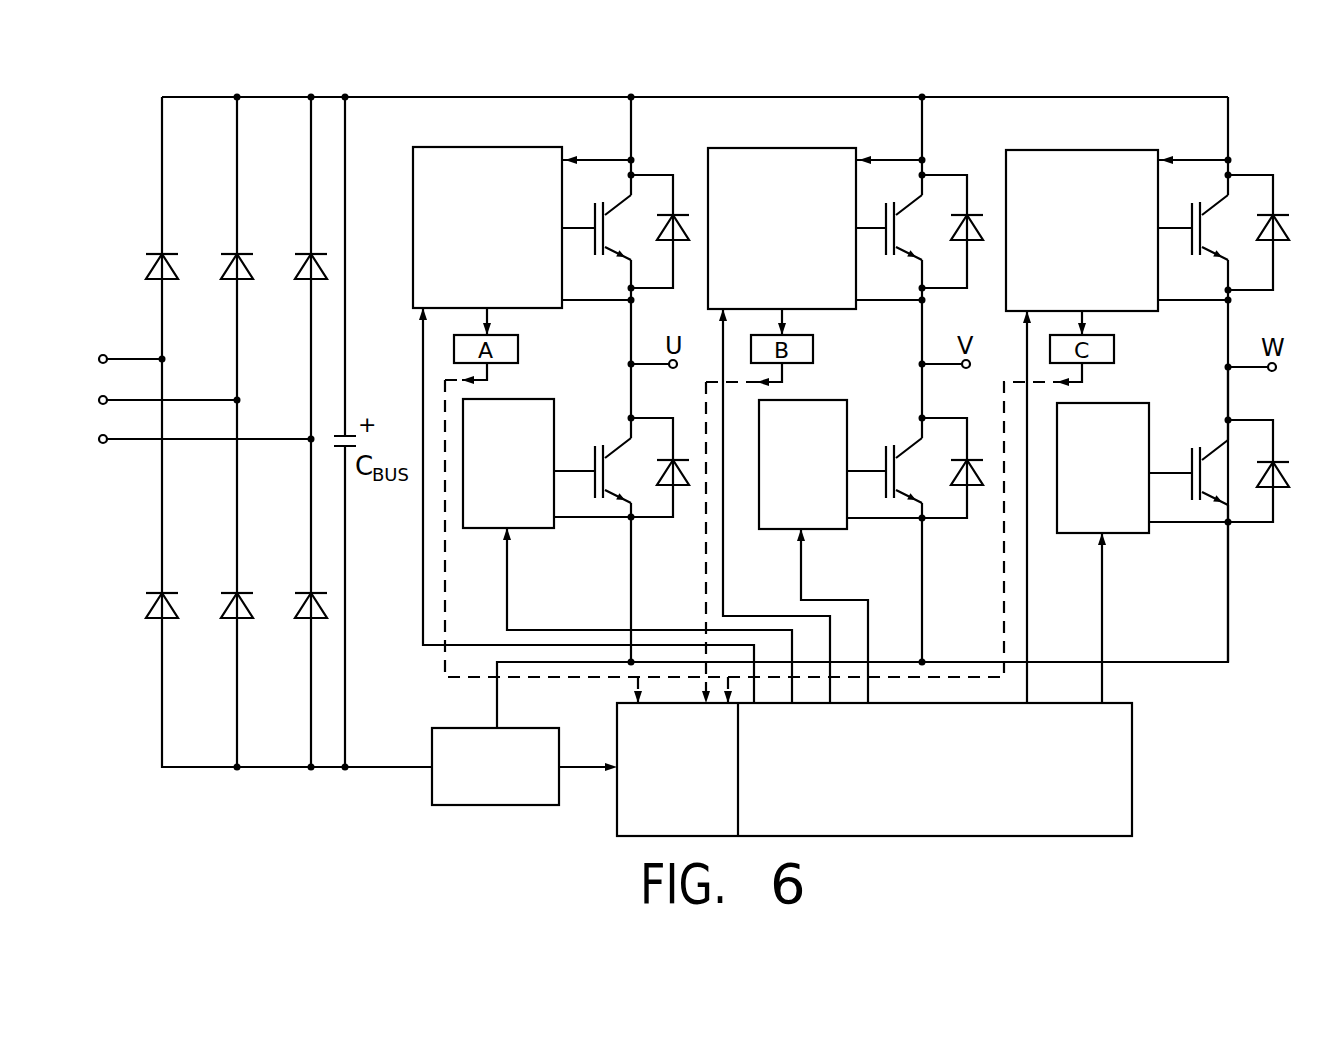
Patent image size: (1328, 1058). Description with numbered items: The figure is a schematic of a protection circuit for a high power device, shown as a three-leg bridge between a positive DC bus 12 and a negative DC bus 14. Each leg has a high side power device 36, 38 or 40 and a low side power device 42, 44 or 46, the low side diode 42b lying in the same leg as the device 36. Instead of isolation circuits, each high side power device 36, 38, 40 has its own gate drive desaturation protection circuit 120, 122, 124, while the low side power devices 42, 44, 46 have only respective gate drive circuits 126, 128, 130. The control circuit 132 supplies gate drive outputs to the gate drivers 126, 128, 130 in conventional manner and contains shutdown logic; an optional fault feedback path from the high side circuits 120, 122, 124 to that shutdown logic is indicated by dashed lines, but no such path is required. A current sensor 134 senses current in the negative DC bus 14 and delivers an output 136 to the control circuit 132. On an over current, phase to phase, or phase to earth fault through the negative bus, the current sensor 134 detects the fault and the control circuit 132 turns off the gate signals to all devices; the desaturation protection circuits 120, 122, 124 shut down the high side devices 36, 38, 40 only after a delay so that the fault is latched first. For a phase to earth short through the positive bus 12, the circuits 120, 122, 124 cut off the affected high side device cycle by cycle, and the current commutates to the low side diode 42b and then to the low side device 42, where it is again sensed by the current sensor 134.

The positive DC bus 12 is at (856, 97).
The negative DC bus 14 is at (1228, 595).
The high side power device 36 is at (640, 196).
The high side power device 38 is at (936, 198).
The high side power device 40 is at (1237, 206).
The low side power device 42 is at (629, 525).
The low side diode 42b is at (678, 479).
The low side power device 44 is at (927, 450).
The low side power device 46 is at (1230, 452).
The gate drive desaturation protection circuit 120 is at (498, 150).
The gate drive desaturation protection circuit 122 is at (795, 150).
The gate drive desaturation protection circuit 124 is at (1095, 153).
The gate drive circuit 126 is at (505, 403).
The gate drive circuit 128 is at (800, 408).
The gate drive circuit 130 is at (1108, 408).
The control circuit 132 is at (1120, 779).
The current sensor 134 is at (507, 728).
The output 136 is at (582, 768).